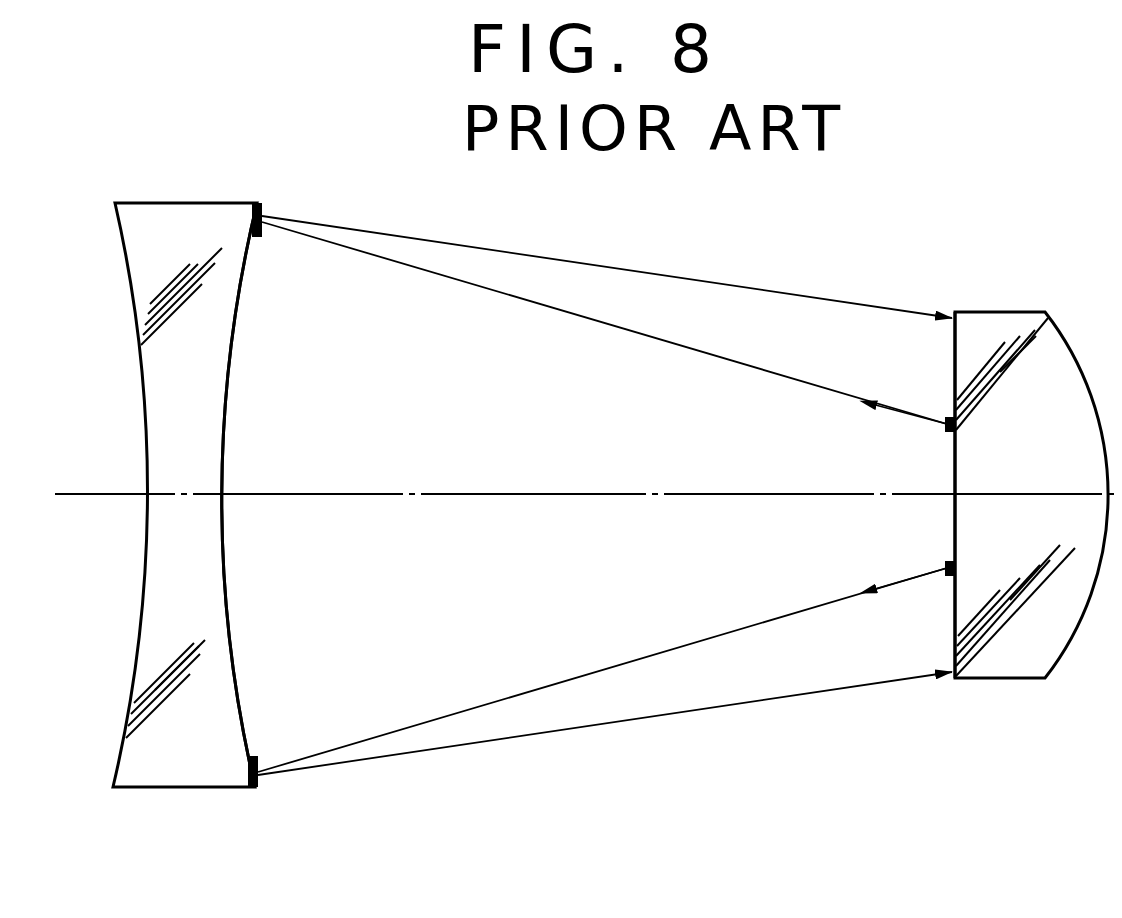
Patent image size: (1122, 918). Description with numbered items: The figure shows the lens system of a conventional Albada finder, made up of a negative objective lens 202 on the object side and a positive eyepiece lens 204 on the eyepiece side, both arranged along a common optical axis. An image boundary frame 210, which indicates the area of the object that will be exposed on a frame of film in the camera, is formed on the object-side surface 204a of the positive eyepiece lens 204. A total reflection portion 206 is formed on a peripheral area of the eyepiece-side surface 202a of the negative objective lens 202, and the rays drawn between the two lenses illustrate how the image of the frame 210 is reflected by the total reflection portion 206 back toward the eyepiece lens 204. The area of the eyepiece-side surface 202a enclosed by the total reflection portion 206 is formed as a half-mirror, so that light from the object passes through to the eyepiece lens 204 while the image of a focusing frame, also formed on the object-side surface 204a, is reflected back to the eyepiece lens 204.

The negative objective lens 202 is at (193, 772).
The eyepiece-side surface of the negative objective lens 202a is at (252, 683).
The positive eyepiece lens 204 is at (1008, 666).
The object-side surface of the positive eyepiece lens 204a is at (952, 632).
The total reflection portion 206 is at (265, 214).
The image boundary frame 210 is at (946, 425).